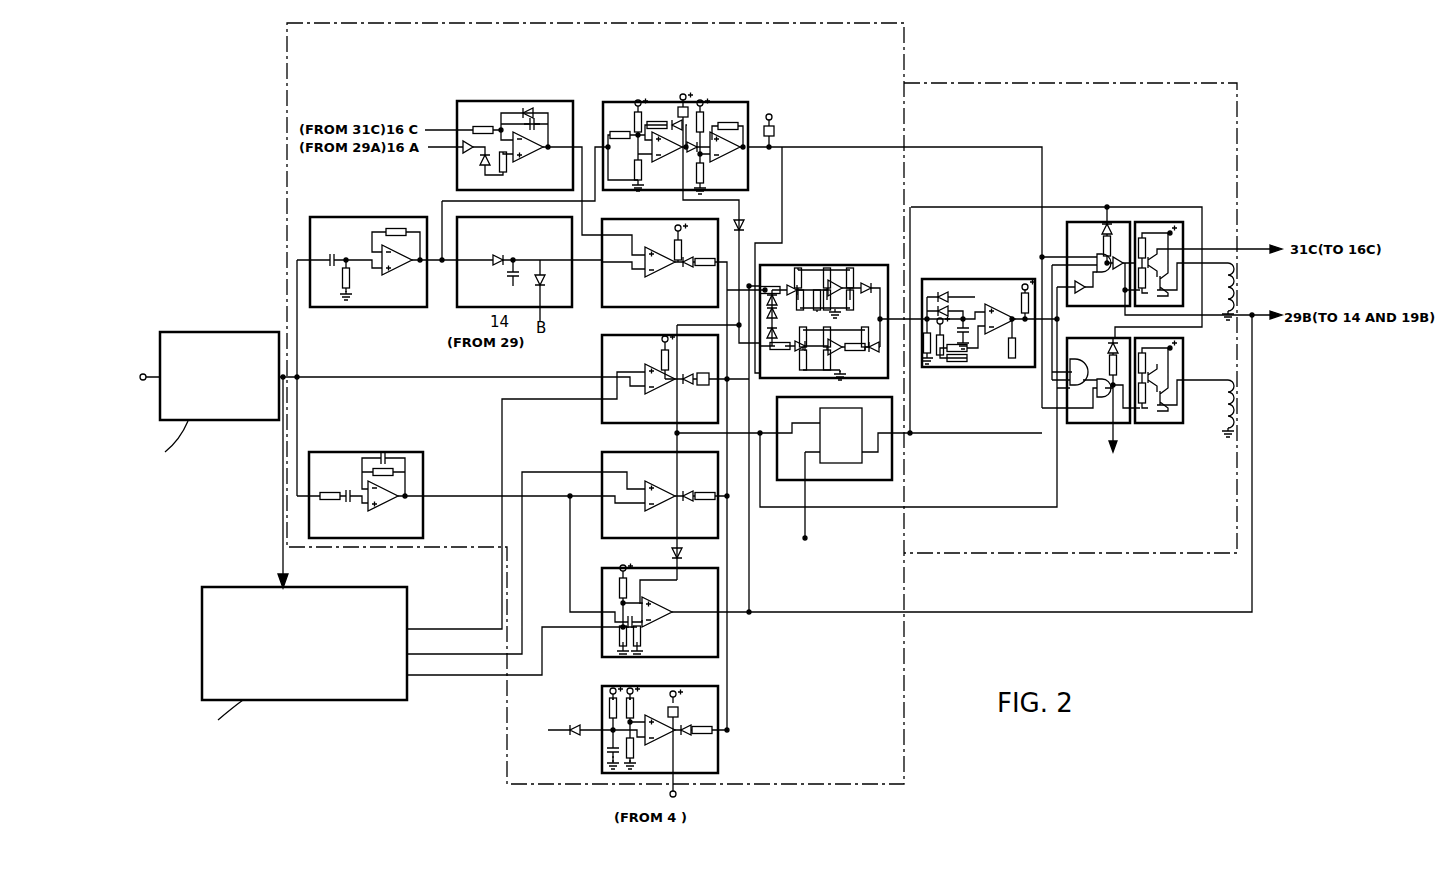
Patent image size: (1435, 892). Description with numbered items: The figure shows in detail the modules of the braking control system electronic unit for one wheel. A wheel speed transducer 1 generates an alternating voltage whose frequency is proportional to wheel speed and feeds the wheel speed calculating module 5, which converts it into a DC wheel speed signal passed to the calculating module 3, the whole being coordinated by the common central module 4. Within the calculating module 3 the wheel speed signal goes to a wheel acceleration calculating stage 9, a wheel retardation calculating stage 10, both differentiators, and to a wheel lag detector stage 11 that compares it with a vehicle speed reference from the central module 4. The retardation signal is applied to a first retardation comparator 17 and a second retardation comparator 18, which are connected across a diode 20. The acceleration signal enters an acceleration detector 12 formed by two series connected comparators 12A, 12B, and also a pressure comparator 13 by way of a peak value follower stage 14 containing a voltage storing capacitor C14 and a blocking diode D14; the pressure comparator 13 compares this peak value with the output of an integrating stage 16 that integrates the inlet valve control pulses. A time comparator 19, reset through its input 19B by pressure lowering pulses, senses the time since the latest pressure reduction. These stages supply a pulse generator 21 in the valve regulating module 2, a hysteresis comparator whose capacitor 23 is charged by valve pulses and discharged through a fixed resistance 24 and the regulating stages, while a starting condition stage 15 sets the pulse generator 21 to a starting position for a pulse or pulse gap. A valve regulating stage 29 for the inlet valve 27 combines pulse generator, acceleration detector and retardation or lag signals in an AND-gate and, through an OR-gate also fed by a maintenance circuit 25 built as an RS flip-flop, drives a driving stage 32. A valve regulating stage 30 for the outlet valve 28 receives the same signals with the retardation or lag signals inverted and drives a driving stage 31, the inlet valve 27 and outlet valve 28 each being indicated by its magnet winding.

The wheel speed transducer 1 is at (149, 375).
The valve regulating module 2 is at (1193, 83).
The calculating module 3 is at (636, 23).
The central module 4 is at (339, 700).
The wheel speed calculating module 5 is at (232, 332).
The wheel acceleration calculating stage 9 is at (310, 242).
The wheel retardation calculating stage 10 is at (423, 472).
The wheel lag detector stage 11 is at (602, 353).
The acceleration detector 12 is at (688, 130).
The first comparator of acceleration detector 12A is at (646, 145).
The second comparator of acceleration detector 12B is at (713, 147).
The pressure comparator 13 is at (660, 242).
The peak value follower stage 14 is at (514, 262).
The blocking diode D14 is at (500, 255).
The voltage storing capacitor C14 is at (506, 277).
The starting condition stage 15 is at (819, 266).
The integrating stage 16 is at (461, 101).
The first retardation comparator 17 is at (602, 464).
The second retardation comparator 18 is at (602, 593).
The time comparator 19 is at (718, 751).
The input of time comparator 19B is at (543, 735).
The diode 20 is at (685, 553).
The pulse generator 21 is at (961, 319).
The capacitor 23 is at (963, 316).
The fixed resistance 24 is at (927, 350).
The maintenance circuit 25 is at (892, 468).
The inlet valve 27 is at (1240, 415).
The outlet valve 28 is at (1235, 294).
The valve regulating stage for inlet valve 29 is at (1086, 423).
The valve regulating stage for outlet valve 30 is at (1106, 222).
The driving stage for outlet valve 31 is at (1185, 236).
The driving stage for inlet valve 32 is at (1183, 367).